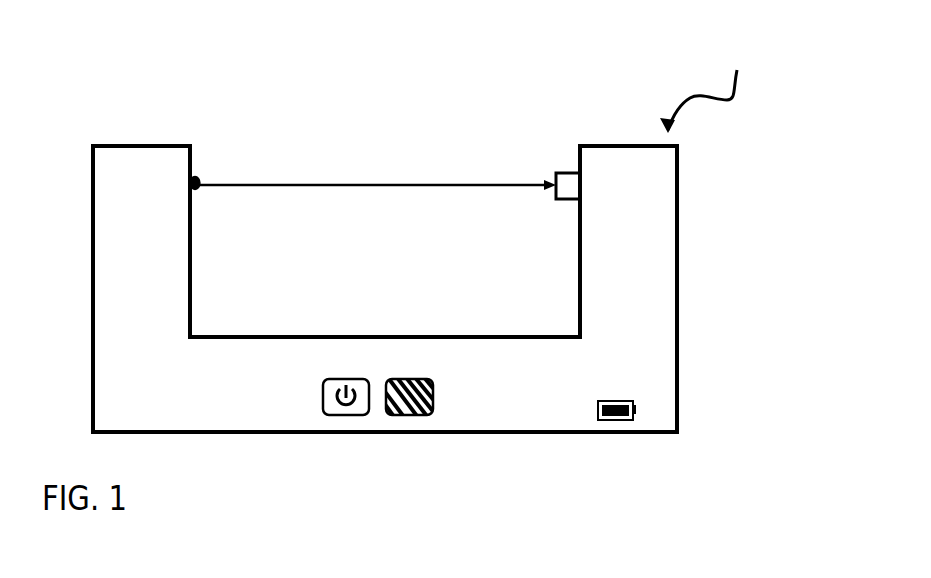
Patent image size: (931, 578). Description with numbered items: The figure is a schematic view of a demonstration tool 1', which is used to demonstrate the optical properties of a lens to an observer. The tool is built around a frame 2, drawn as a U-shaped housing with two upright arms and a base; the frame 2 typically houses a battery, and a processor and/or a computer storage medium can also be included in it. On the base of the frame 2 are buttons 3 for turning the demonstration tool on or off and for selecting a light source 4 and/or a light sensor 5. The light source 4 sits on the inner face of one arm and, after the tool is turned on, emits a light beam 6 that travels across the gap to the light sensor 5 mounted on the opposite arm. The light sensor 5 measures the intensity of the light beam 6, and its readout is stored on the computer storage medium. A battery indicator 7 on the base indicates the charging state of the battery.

The demonstration tool 1' is at (714, 78).
The frame 2 is at (673, 317).
The buttons 3 is at (405, 416).
The light source 4 is at (201, 178).
The light sensor 5 is at (565, 202).
The light beam 6 is at (382, 188).
The battery indicator 7 is at (635, 403).